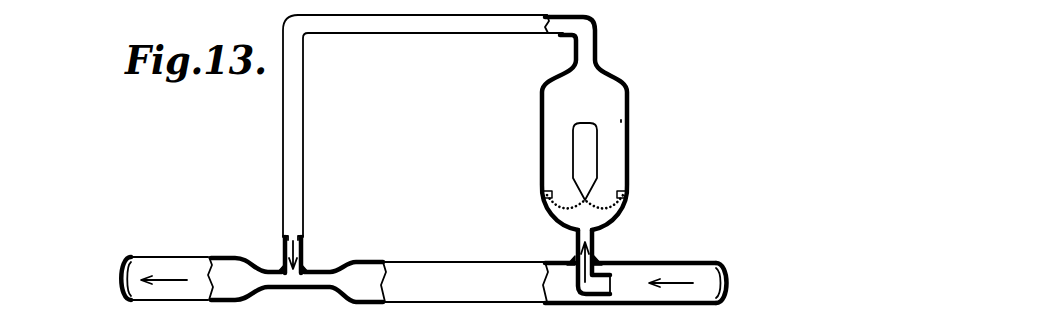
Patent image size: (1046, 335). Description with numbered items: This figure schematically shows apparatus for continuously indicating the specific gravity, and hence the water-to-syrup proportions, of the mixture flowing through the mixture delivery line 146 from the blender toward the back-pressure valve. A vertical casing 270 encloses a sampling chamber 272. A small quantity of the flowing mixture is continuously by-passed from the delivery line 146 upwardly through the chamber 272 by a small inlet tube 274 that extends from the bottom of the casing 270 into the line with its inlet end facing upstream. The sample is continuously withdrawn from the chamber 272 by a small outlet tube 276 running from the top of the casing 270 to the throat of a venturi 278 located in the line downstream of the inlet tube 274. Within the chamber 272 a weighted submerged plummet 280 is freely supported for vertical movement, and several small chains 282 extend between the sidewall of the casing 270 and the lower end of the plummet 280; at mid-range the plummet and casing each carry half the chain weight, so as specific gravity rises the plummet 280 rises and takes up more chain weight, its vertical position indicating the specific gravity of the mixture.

The mixture delivery line 146 is at (580, 305).
The vertical casing 270 is at (631, 96).
The sampling chamber 272 is at (608, 158).
The inlet tube 274 is at (598, 246).
The outlet tube 276 is at (292, 120).
The venturi 278 is at (303, 290).
The submerged plummet 280 is at (578, 150).
The chains 282 is at (552, 210).